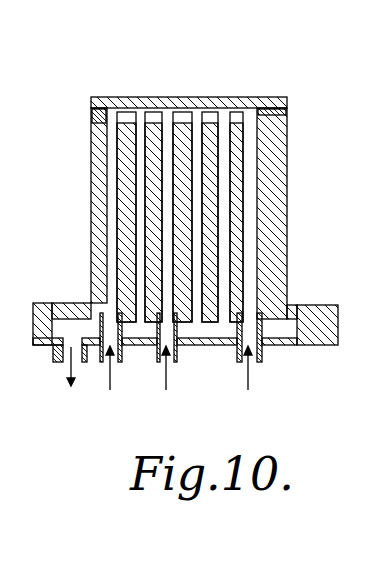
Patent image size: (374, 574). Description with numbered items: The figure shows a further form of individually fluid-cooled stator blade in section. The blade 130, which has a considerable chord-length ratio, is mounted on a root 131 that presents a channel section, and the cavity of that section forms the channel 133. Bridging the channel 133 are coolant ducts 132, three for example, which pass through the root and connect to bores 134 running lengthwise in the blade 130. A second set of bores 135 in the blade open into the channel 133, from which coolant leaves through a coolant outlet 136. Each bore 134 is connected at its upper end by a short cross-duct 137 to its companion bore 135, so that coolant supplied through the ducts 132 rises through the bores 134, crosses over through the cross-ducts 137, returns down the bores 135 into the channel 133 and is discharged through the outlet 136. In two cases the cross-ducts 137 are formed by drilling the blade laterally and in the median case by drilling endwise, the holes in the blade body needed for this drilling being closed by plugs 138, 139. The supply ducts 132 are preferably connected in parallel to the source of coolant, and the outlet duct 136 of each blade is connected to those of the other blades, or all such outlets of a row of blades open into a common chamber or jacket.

The blade 130 is at (288, 196).
The root 131 is at (190, 336).
The coolant ducts 132 is at (158, 370).
The channel cavity 133 is at (278, 350).
The bores 134 is at (172, 230).
The second set of bores 135 is at (226, 172).
The coolant outlet 136 is at (66, 372).
The cross-duct 137 is at (117, 117).
The plug 138 is at (92, 112).
The plug 139 is at (182, 112).